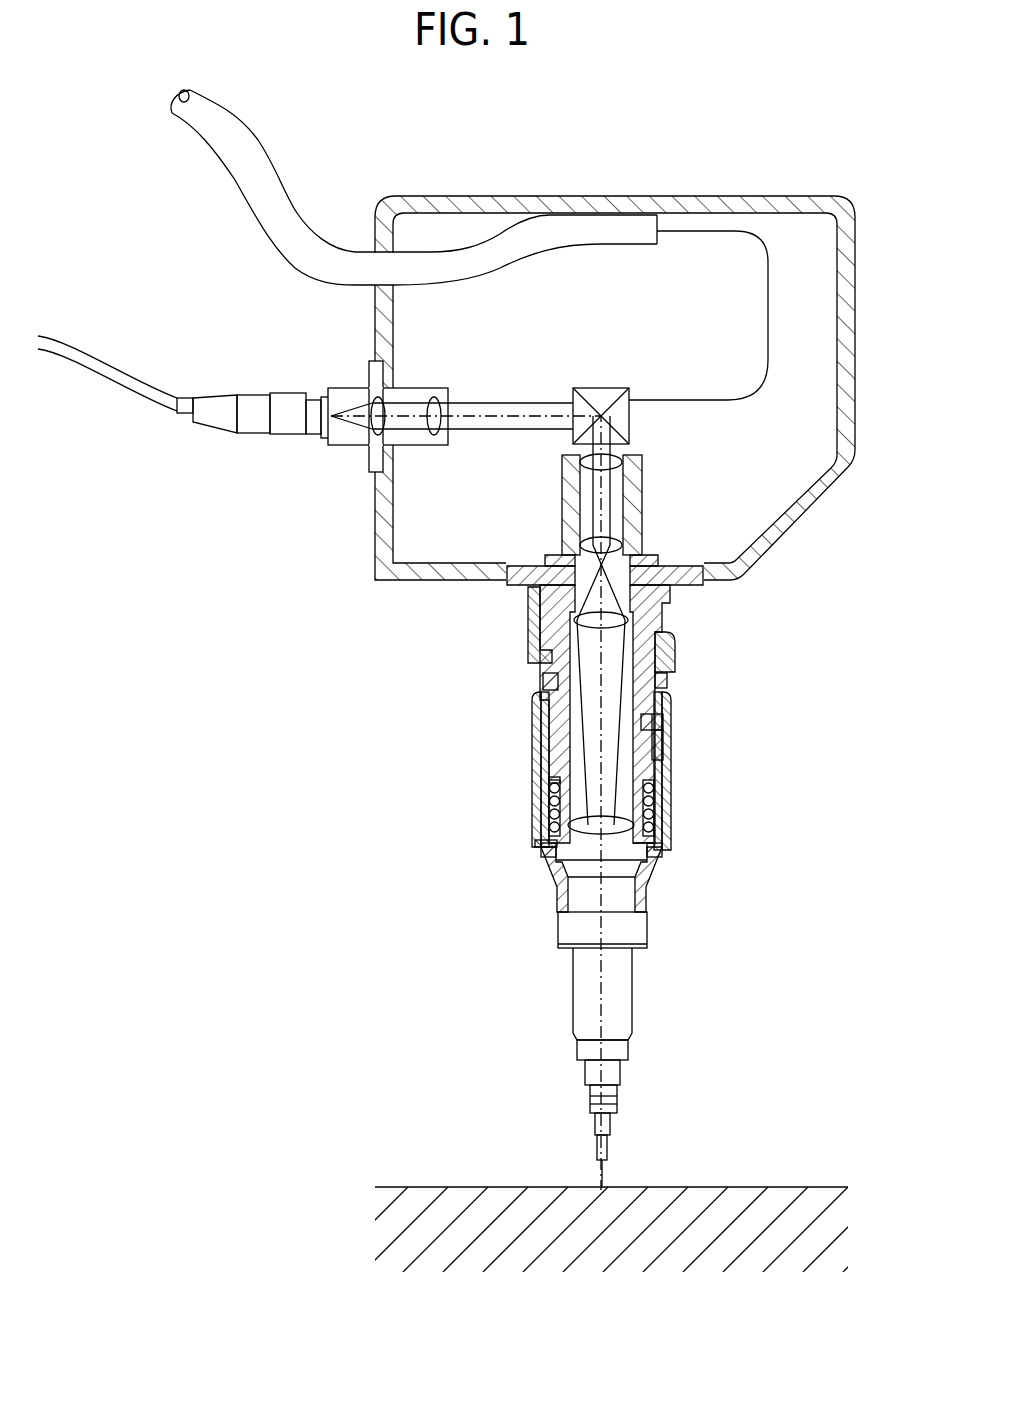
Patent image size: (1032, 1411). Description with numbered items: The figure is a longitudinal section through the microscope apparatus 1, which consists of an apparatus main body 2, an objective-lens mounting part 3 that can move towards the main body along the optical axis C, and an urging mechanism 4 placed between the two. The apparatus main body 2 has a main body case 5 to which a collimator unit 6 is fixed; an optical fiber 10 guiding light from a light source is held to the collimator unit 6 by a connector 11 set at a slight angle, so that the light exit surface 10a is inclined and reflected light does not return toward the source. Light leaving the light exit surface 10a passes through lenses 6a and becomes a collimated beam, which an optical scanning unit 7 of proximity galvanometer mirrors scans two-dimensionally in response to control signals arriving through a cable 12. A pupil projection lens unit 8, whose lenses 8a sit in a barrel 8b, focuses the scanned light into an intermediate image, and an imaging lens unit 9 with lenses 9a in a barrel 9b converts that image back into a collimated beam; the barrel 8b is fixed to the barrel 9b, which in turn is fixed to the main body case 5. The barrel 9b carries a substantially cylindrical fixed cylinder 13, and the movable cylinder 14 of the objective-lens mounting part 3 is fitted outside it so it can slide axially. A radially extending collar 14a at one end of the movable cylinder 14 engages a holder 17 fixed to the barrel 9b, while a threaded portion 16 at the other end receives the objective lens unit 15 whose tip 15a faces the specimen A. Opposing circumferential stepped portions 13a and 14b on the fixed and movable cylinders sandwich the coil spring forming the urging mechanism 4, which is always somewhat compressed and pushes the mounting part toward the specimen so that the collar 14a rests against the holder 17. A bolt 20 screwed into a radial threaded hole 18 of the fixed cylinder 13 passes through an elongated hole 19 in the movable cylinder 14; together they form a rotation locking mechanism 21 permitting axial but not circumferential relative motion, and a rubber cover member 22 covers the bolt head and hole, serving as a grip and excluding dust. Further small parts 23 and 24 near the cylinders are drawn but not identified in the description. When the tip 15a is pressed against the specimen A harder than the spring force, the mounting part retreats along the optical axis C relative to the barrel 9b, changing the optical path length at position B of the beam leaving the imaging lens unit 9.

The microscope apparatus 1 is at (745, 137).
The apparatus main body 2 is at (833, 597).
The objective-lens mounting part 3 is at (650, 862).
The urging mechanism 4 is at (670, 797).
The main body case 5 is at (812, 505).
The collimator unit 6 is at (426, 448).
The lenses 6a is at (381, 398).
The optical scanning unit 7 is at (600, 386).
The pupil projection lens unit 8 is at (618, 504).
The lenses 8a is at (580, 470).
The barrel 8b is at (637, 483).
The imaging lens unit 9 is at (631, 699).
The lenses 9a is at (574, 617).
The barrel 9b is at (692, 588).
The optical fiber 10 is at (147, 390).
The light exit surface 10a is at (338, 446).
The connector 11 is at (282, 436).
The cable 12 is at (769, 325).
The fixed cylinder 13 is at (534, 713).
The stepped portion 13a is at (549, 784).
The movable cylinder 14 is at (542, 742).
The collar 14a is at (674, 642).
The stepped portion 14b is at (541, 827).
The objective lens unit 15 is at (580, 1000).
The tip 15a is at (609, 1168).
The threaded portion 16 is at (632, 915).
The holder 17 is at (527, 634).
The threaded hole 18 is at (665, 737).
The elongated hole 19 is at (663, 794).
The bolt 20 is at (665, 722).
The rotation locking mechanism 21 is at (691, 764).
The cover member 22 is at (672, 830).
The stopper 23 is at (667, 683).
The spacer 24 is at (543, 680).
The specimen A is at (833, 1187).
The position B is at (646, 858).
The optical axis C is at (606, 985).